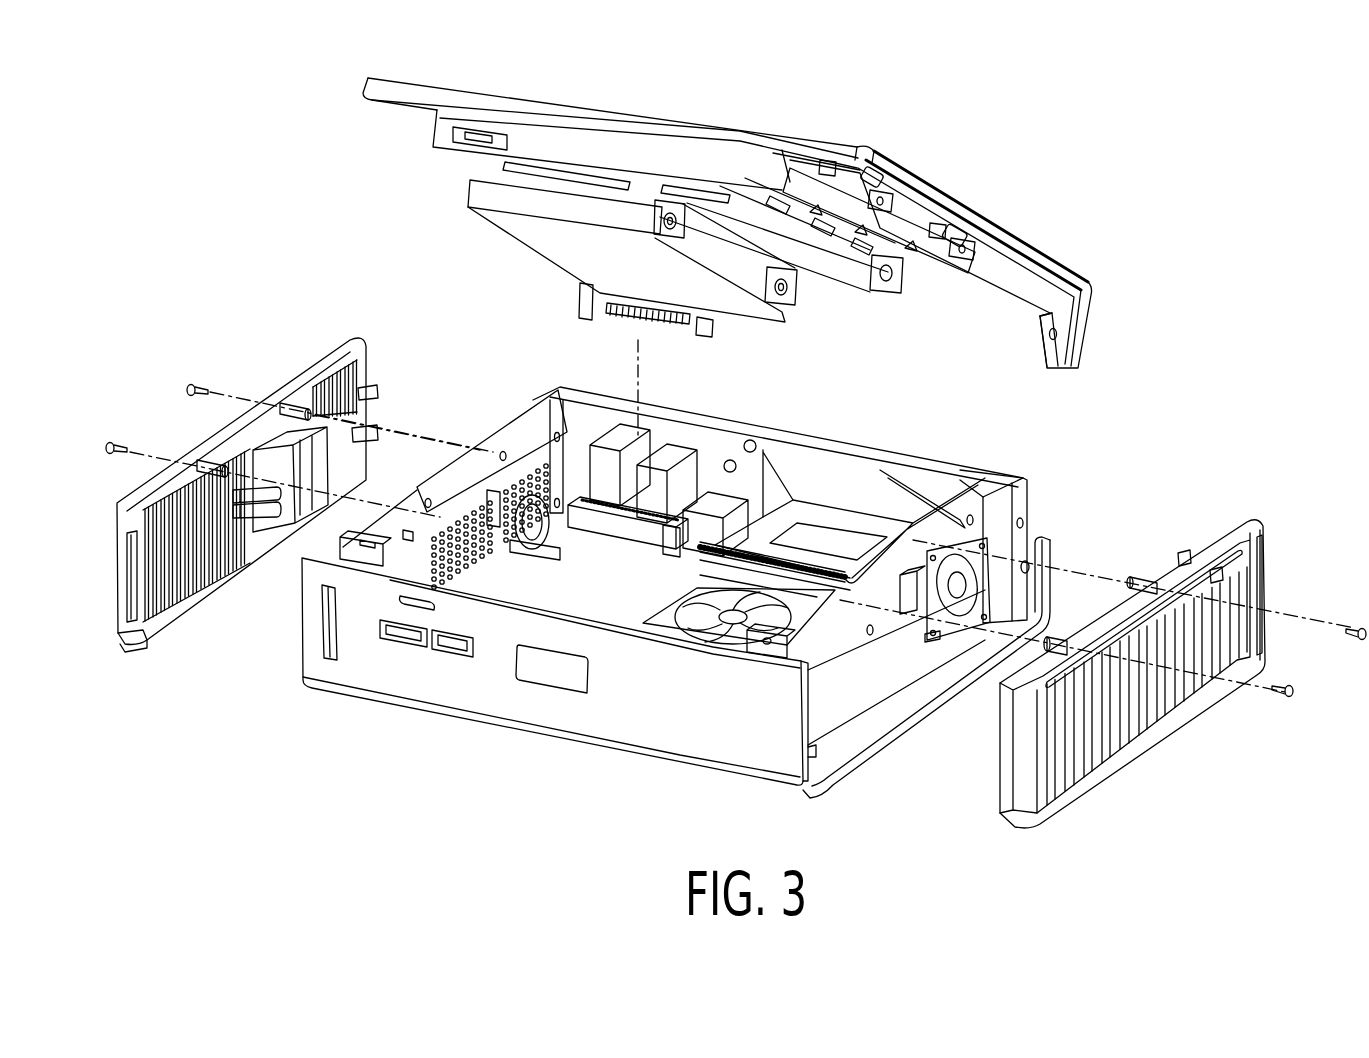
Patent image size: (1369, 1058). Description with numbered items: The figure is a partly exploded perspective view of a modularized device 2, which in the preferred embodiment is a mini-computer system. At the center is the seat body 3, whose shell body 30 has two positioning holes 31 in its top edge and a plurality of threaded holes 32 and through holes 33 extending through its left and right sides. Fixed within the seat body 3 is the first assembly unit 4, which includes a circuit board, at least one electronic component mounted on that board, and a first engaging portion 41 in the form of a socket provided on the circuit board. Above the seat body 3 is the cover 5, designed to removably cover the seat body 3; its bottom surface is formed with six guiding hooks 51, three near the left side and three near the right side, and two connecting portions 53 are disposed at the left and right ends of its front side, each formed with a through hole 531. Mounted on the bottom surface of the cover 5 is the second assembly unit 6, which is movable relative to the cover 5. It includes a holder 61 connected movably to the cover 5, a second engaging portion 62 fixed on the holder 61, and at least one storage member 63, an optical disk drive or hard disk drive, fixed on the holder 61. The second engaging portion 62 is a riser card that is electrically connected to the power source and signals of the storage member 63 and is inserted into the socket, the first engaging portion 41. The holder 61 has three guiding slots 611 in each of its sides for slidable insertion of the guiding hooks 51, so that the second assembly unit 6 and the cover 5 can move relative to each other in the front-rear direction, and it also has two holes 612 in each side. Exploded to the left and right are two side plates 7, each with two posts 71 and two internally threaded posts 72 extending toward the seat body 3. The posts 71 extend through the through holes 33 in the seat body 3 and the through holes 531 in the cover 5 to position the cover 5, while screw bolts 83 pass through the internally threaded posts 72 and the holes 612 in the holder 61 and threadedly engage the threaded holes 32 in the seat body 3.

The modularized device 2 is at (1160, 181).
The seat body 3 is at (627, 765).
The shell body 30 is at (522, 700).
The positioning holes 31 is at (333, 538).
The threaded holes 32 is at (421, 500).
The through holes 33 is at (1028, 566).
The first assembly unit 4 is at (603, 592).
The first engaging portion 41 is at (660, 523).
The cover 5 is at (715, 108).
The guiding hooks 51 is at (871, 172).
The connecting portions 53 is at (1050, 357).
The through hole 531 is at (1046, 334).
The second assembly unit 6 is at (456, 187).
The holder 61 is at (931, 226).
The guiding slots 611 is at (824, 161).
The holes 612 is at (914, 212).
The second engaging portion 62 is at (630, 320).
The storage member 63 is at (520, 225).
The side plates 7 is at (175, 625).
The posts 71 is at (381, 430).
The internally threaded posts 72 is at (215, 466).
The screw bolts 83 is at (115, 447).